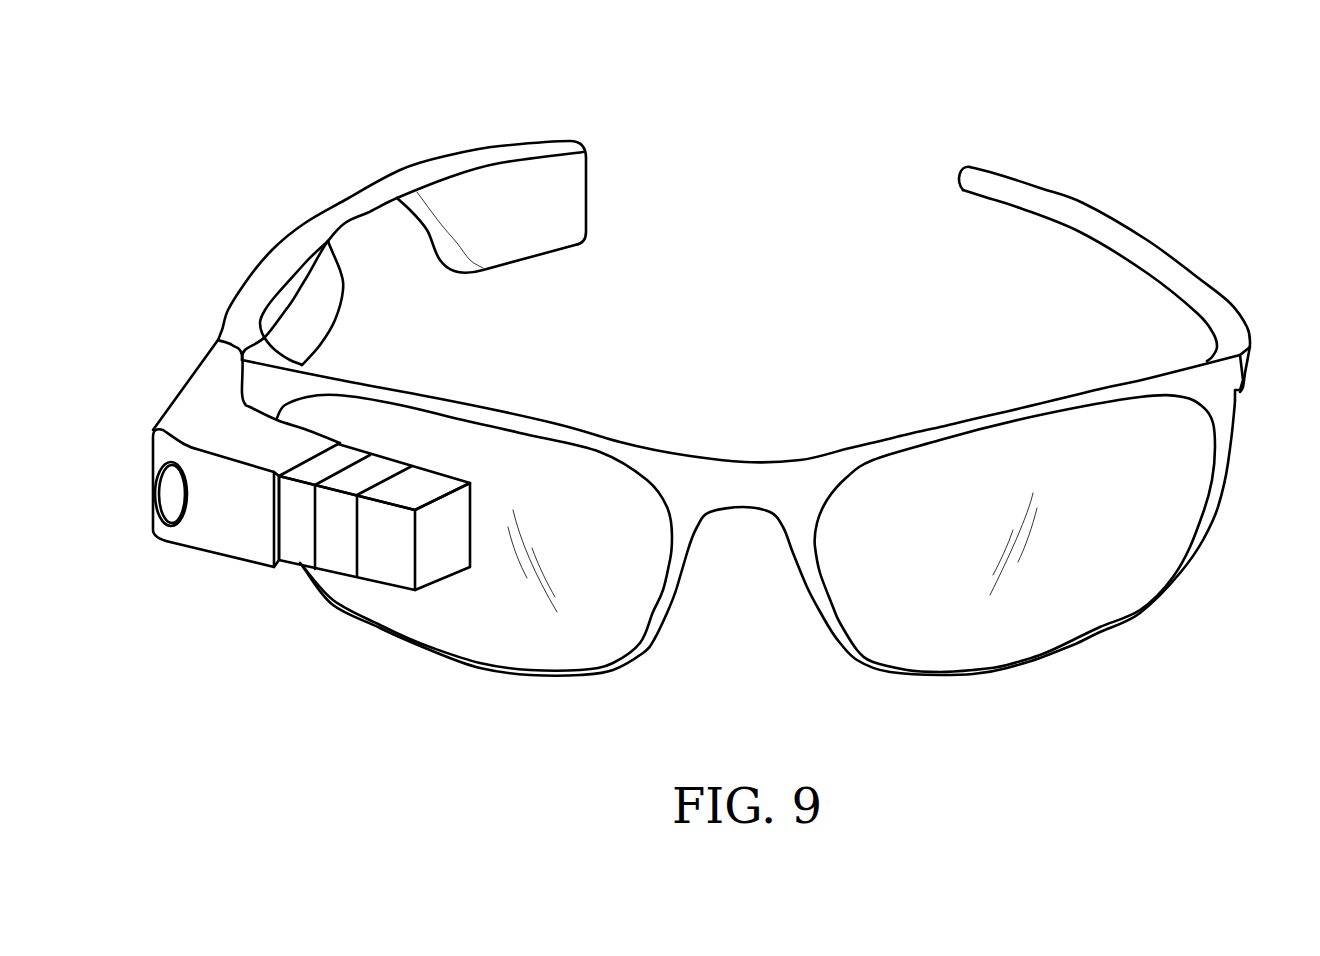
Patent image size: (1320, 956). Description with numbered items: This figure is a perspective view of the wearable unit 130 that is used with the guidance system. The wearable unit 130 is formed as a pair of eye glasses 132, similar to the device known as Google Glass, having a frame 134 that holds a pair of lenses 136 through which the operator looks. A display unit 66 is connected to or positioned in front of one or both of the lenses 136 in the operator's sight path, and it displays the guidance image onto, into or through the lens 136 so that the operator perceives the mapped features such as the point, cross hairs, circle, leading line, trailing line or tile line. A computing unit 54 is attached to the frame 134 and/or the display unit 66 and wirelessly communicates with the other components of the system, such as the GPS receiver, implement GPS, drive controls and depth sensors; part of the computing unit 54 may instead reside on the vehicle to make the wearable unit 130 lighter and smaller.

The wearable unit 130 is at (692, 370).
The eye glasses 132 is at (797, 428).
The frame 134 is at (1003, 412).
The lenses 136 is at (560, 480).
The computing unit 54 is at (202, 407).
The display unit 66 is at (330, 530).